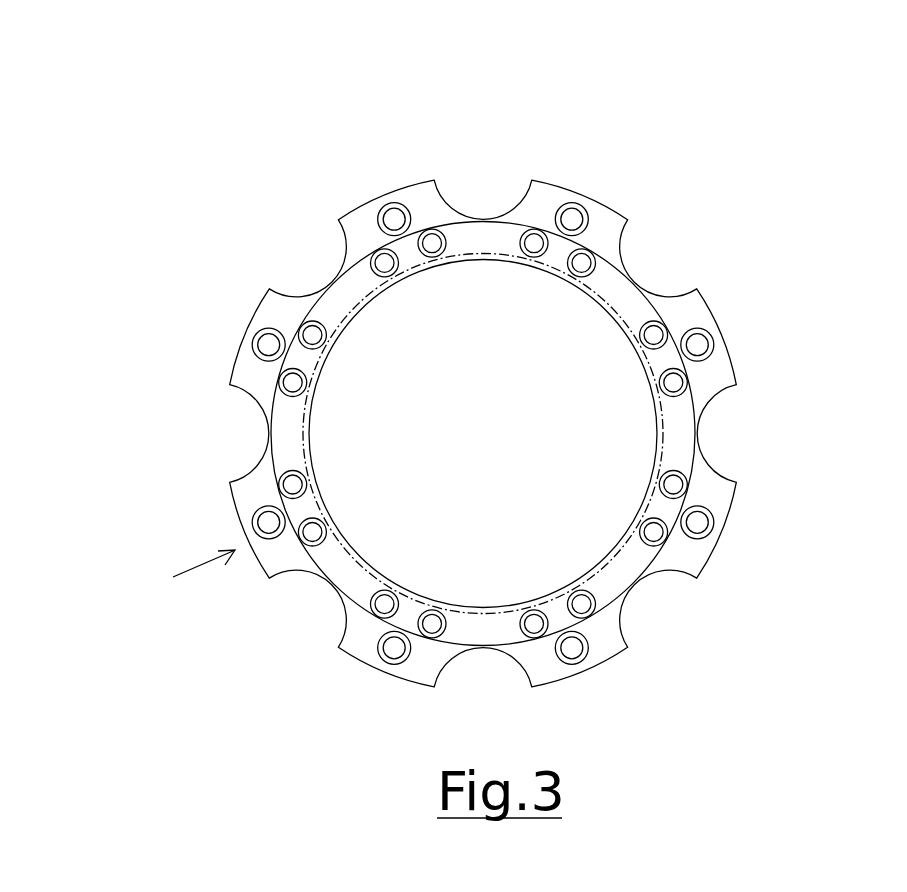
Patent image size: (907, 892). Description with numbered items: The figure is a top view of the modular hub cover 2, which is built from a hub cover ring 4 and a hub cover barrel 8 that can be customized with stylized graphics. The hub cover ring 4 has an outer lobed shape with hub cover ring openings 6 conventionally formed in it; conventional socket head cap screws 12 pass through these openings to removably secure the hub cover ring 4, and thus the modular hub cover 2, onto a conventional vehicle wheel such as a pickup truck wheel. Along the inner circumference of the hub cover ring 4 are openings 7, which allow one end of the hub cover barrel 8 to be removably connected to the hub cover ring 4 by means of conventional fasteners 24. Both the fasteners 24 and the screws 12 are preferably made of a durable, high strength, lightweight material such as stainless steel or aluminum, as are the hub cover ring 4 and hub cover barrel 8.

The modular hub cover 2 is at (504, 376).
The hub cover ring 4 is at (598, 205).
The hub cover ring openings 6 is at (262, 337).
The openings 7 is at (187, 569).
The hub cover barrel 8 is at (356, 574).
The socket head cap screws 12 is at (714, 521).
The fasteners 24 is at (427, 236).